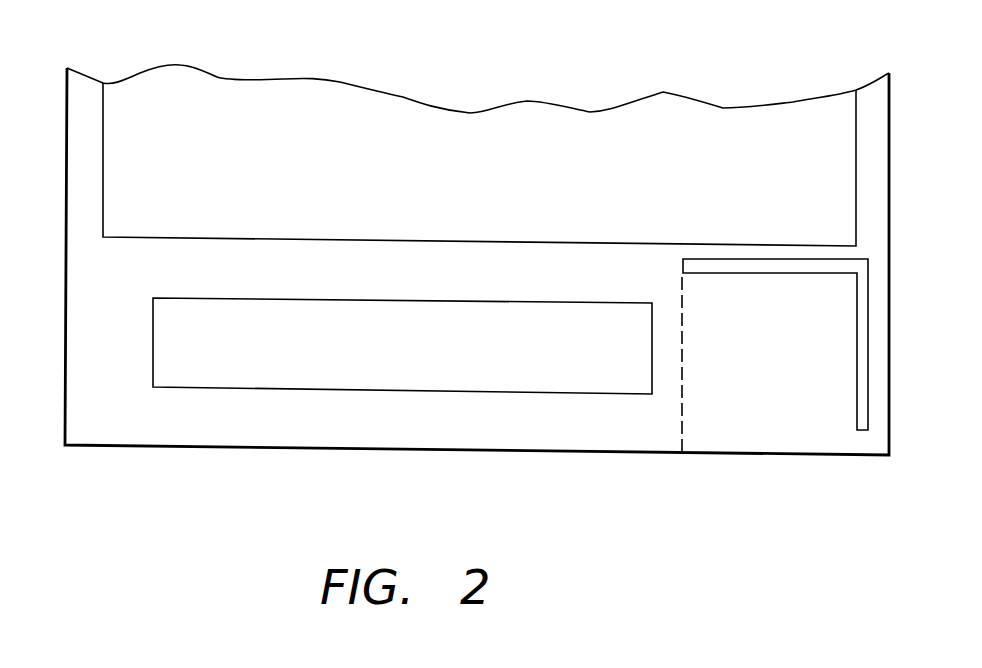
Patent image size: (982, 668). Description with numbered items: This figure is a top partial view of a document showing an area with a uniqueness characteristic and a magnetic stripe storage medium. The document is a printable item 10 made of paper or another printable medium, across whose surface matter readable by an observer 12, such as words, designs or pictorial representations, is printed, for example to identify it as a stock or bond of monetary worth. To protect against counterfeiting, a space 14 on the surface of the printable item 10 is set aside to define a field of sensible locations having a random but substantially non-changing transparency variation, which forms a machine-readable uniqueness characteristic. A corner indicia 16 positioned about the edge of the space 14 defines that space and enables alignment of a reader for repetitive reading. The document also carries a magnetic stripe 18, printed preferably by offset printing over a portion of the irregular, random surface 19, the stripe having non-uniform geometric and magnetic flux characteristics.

The printable item 10 is at (327, 450).
The matter readable by an observer 12 is at (622, 150).
The space 14 is at (734, 364).
The corner indicia 16 is at (857, 300).
The magnetic stripe 18 is at (533, 370).
The irregular, random surface 19 is at (390, 269).